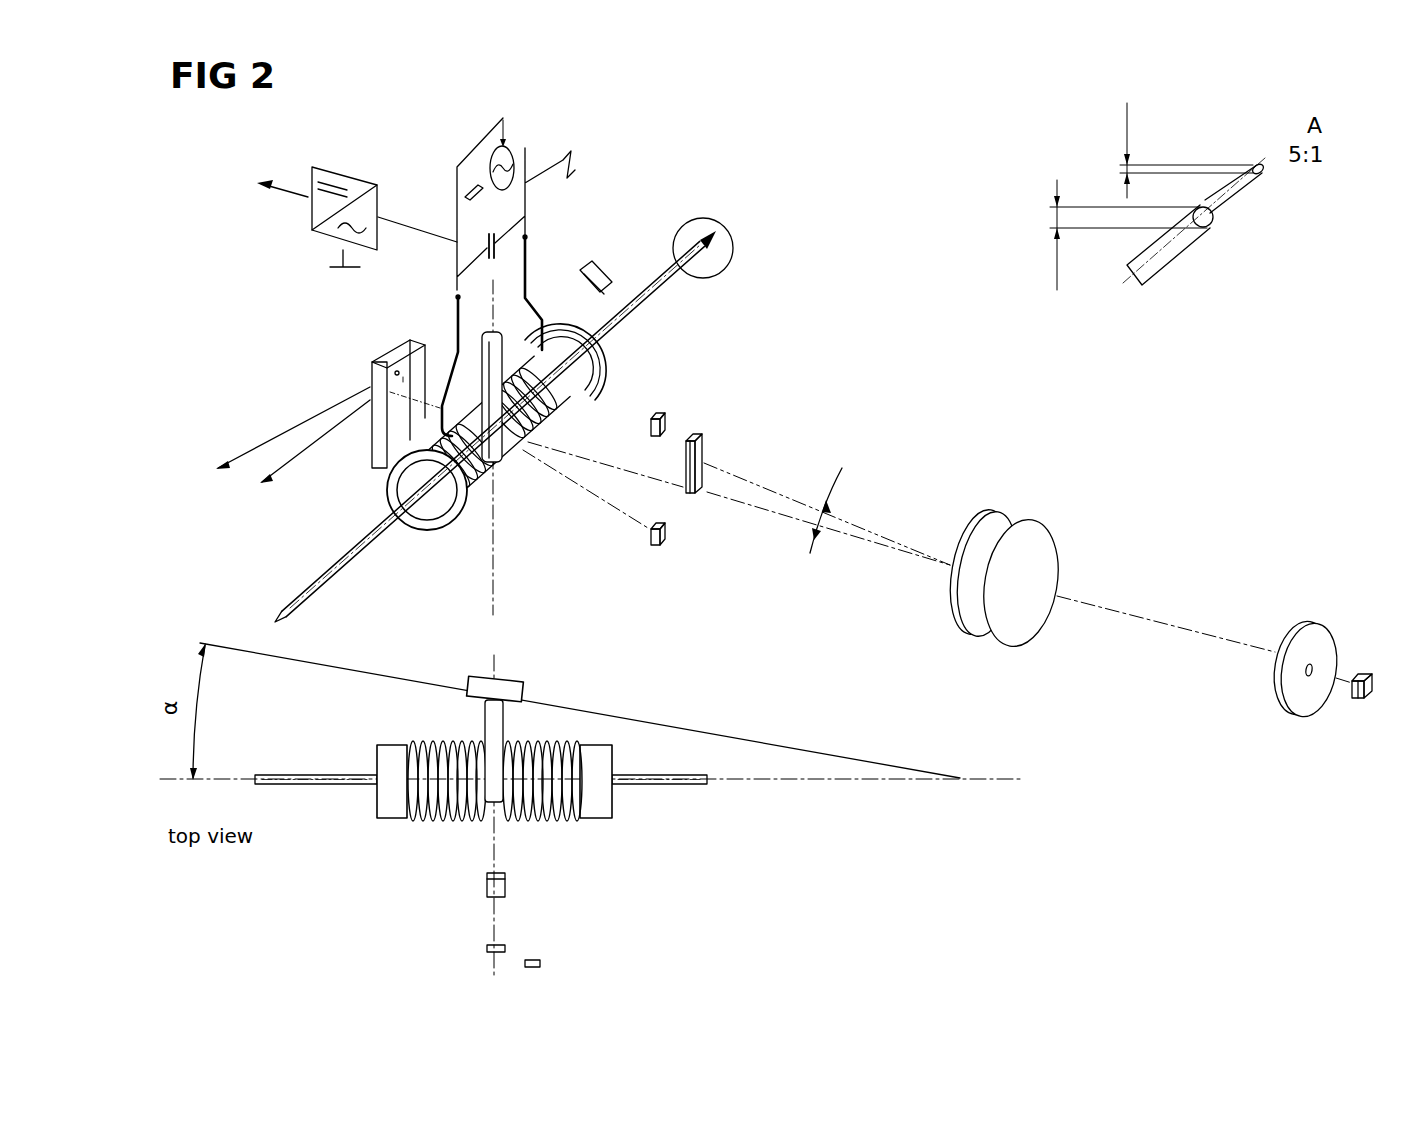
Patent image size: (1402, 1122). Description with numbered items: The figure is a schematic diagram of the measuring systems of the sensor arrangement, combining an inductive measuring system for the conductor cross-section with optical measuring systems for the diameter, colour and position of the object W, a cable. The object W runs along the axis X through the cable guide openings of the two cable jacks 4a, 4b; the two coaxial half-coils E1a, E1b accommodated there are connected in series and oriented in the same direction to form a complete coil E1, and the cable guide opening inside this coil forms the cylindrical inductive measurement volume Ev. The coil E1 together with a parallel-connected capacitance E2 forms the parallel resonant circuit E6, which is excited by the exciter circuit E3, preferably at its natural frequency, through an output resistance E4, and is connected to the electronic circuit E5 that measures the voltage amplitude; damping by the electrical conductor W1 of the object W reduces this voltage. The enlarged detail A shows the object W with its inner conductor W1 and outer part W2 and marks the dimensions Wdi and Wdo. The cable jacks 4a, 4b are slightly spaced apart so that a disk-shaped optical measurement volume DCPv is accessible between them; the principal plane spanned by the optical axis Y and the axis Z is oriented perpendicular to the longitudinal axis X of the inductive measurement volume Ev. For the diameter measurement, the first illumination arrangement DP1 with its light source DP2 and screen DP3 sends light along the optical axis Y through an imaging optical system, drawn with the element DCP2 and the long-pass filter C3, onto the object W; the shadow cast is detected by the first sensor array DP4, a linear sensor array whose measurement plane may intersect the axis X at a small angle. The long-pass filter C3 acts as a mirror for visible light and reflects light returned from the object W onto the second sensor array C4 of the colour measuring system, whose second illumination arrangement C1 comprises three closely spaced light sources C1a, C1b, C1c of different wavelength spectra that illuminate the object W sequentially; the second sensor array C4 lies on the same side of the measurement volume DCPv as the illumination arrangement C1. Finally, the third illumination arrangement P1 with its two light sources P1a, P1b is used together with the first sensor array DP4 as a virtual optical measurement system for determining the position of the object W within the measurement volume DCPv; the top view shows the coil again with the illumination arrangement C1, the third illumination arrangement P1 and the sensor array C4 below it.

The output resistance E4 is at (473, 182).
The electronic circuit E5 is at (312, 232).
The parallel resonant circuit E6 is at (381, 274).
The capacitor E2 is at (483, 245).
The coil E1 is at (380, 335).
The half-coil E1a is at (455, 300).
The half-coil E1b is at (520, 252).
The exciter circuit E3 is at (510, 183).
The second illumination arrangement C1 is at (588, 525).
The light source C1a is at (590, 525).
The light source C1b is at (590, 525).
The light source C1c is at (602, 272).
The axis x X is at (728, 223).
The detail A is at (745, 253).
The cable jack 4b is at (588, 368).
The cable jack 4a is at (442, 528).
The light source P1b is at (665, 417).
The light source P1a is at (662, 543).
The third illumination arrangement P1 is at (498, 945).
The second sensor array C4 is at (705, 455).
The lens DCP2 is at (997, 527).
The long-pass filter C3 is at (1033, 557).
The first illumination arrangement DP1 is at (1282, 644).
The light source DP2 is at (1363, 673).
The screen DP3 is at (1317, 648).
The first sensor array DP4 is at (380, 445).
The optic axis y Y is at (756, 708).
The axis z Z is at (480, 447).
The inductive measurement volume Ev is at (412, 482).
The optical measurement volume DCPv is at (490, 460).
The object W is at (343, 553).
The electrical conductor W1 is at (1230, 197).
The outer wire W2 is at (1182, 250).
The inner wire diameter Wdi is at (1176, 150).
The outer wire diameter Wdo is at (1118, 236).